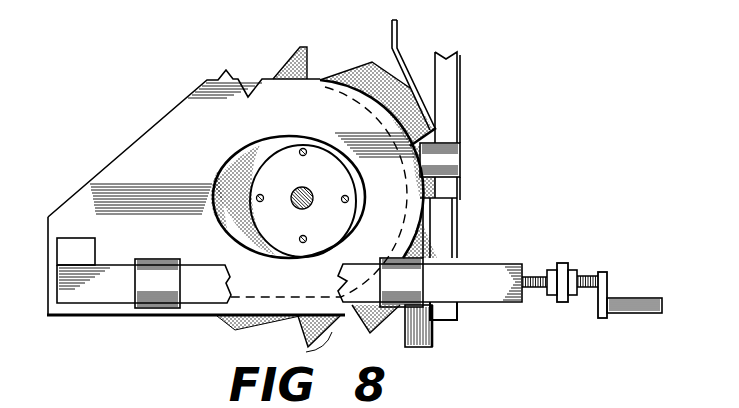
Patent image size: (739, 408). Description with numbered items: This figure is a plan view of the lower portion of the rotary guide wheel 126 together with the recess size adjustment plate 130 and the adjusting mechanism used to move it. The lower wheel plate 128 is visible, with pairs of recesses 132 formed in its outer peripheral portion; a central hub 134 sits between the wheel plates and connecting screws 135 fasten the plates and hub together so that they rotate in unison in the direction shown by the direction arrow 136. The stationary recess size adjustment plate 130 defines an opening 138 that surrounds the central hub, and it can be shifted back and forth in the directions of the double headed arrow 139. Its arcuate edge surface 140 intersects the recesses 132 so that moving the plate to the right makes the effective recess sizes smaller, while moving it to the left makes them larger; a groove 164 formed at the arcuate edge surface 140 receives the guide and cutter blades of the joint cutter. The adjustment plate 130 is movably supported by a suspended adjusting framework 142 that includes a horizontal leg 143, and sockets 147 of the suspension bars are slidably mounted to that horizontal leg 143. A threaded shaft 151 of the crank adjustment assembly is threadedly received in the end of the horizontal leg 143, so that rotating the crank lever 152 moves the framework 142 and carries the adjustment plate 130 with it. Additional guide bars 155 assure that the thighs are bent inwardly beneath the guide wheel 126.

The rotary guide wheel 126 is at (396, 334).
The lower wheel plate 128 is at (348, 77).
The recess size adjustment plate 130 is at (141, 128).
The recesses 132 is at (315, 63).
The central hub 134 is at (317, 153).
The connecting screws 135 is at (302, 155).
The direction arrow 136 is at (372, 26).
The opening 138 is at (214, 218).
The double headed arrow 139 is at (182, 330).
The arcuate edge surface 140 is at (345, 307).
The suspended adjusting framework 142 is at (104, 258).
The horizontal leg 143 is at (210, 270).
The sockets 147 is at (163, 262).
The threaded adjusting rod 151 is at (535, 278).
The crank lever 152 is at (605, 292).
The guide bars 155 is at (398, 28).
The groove 164 is at (323, 297).